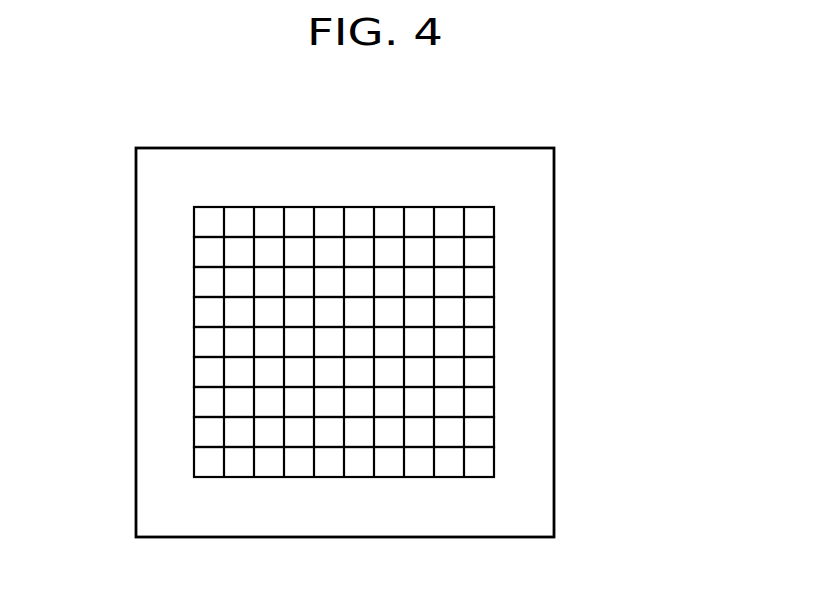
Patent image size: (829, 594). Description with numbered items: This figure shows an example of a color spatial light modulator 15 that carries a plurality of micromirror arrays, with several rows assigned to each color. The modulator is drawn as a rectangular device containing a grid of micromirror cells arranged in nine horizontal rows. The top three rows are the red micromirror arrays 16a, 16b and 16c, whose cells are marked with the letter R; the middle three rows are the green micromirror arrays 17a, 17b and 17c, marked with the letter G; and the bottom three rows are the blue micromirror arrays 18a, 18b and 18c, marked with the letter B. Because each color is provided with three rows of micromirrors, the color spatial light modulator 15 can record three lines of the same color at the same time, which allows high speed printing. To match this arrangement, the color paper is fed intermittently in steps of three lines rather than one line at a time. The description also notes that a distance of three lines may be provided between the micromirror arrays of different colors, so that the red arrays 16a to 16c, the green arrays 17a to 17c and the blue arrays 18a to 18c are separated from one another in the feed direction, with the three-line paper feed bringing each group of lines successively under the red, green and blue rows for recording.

The color spatial light modulator 15 is at (575, 197).
The red micromirror array 16a is at (194, 222).
The red micromirror array 16b is at (194, 252).
The red micromirror array 16c is at (194, 282).
The green micromirror array 17a is at (494, 311).
The green micromirror array 17b is at (494, 341).
The green micromirror array 17c is at (494, 372).
The blue micromirror array 18a is at (194, 402).
The blue micromirror array 18b is at (194, 432).
The blue micromirror array 18c is at (194, 462).